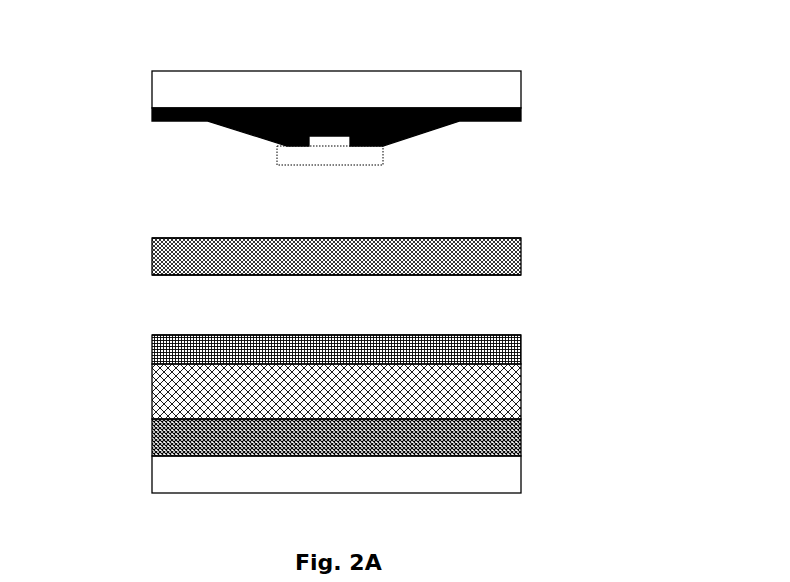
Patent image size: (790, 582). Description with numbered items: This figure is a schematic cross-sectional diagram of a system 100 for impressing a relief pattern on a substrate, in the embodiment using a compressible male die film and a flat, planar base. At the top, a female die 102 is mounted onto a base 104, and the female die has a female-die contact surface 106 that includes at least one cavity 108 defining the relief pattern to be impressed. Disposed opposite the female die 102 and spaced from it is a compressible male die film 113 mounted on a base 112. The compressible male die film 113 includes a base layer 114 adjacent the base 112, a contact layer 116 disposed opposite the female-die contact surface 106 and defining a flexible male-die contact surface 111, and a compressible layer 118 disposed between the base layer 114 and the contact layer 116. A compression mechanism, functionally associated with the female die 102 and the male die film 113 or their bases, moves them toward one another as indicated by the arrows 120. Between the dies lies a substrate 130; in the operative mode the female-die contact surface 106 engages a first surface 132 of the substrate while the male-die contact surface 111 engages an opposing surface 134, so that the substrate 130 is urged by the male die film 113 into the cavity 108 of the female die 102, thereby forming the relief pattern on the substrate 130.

The system 100 is at (281, 96).
The female die 102 is at (152, 113).
The base 104 is at (170, 93).
The female-die contact surface 106 is at (432, 143).
The cavity 108 is at (328, 140).
The male-die contact surface 111 is at (487, 336).
The base 112 is at (178, 480).
The compressible male die film 113 is at (324, 364).
The base layer 114 is at (170, 427).
The contact layer 116 is at (170, 353).
The compressible layer 118 is at (177, 395).
The arrows 120 is at (651, 58).
The substrate 130 is at (282, 252).
The first surface 132 is at (177, 237).
The opposing surface 134 is at (180, 277).